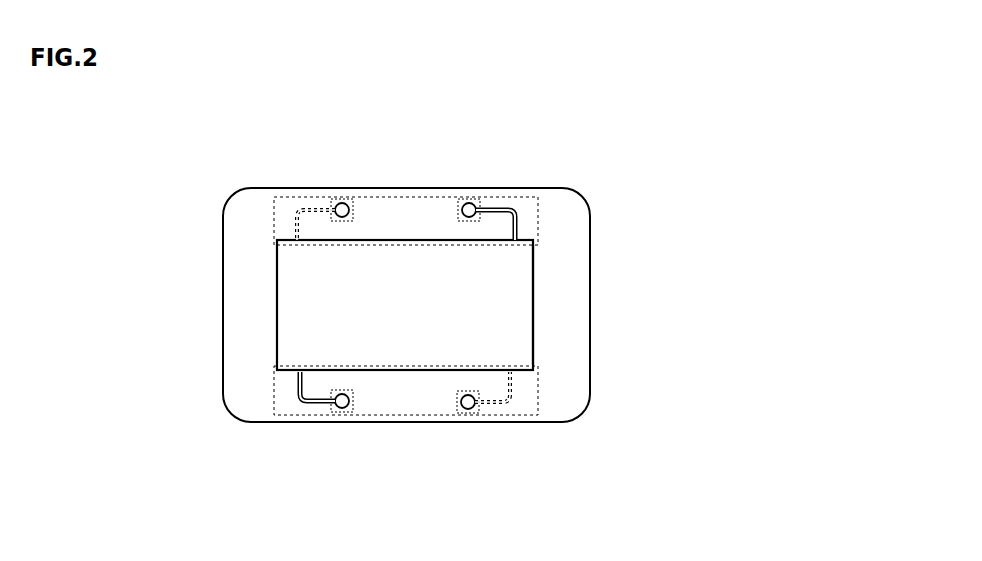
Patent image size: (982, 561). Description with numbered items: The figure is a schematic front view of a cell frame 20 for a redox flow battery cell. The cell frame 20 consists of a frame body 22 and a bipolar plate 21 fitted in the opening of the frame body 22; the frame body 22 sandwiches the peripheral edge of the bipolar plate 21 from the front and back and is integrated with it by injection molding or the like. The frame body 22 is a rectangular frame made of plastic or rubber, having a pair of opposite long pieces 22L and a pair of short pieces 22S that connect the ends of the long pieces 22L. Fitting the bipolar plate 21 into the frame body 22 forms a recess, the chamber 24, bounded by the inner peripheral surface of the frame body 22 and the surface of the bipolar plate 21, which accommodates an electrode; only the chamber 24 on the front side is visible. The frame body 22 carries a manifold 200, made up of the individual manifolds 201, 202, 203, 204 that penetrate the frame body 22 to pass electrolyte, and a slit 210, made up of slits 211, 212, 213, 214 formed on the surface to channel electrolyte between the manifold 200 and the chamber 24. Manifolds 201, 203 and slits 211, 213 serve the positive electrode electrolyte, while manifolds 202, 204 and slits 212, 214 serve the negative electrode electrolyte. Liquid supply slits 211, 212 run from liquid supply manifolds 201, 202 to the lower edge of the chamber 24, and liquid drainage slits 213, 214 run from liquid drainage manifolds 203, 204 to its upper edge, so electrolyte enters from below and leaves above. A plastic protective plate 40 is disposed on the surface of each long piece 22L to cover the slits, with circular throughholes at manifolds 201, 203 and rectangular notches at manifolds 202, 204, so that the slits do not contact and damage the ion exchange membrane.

The cell frame 20 is at (454, 311).
The bipolar plate 21 is at (305, 302).
The frame body 22 is at (221, 242).
The short piece 22S is at (228, 328).
The long piece 22L is at (397, 188).
The chamber 24 is at (532, 308).
The protective plate 40 is at (432, 197).
The manifold 200 is at (701, 448).
The liquid supply manifold 201 is at (338, 408).
The liquid supply manifold 202 is at (470, 410).
The liquid drainage manifold 203 is at (470, 202).
The liquid drainage manifold 204 is at (344, 203).
The slit 210 is at (701, 480).
The liquid supply slit 211 is at (295, 397).
The liquid supply slit 212 is at (520, 380).
The liquid drainage slit 213 is at (518, 212).
The liquid drainage slit 214 is at (295, 218).